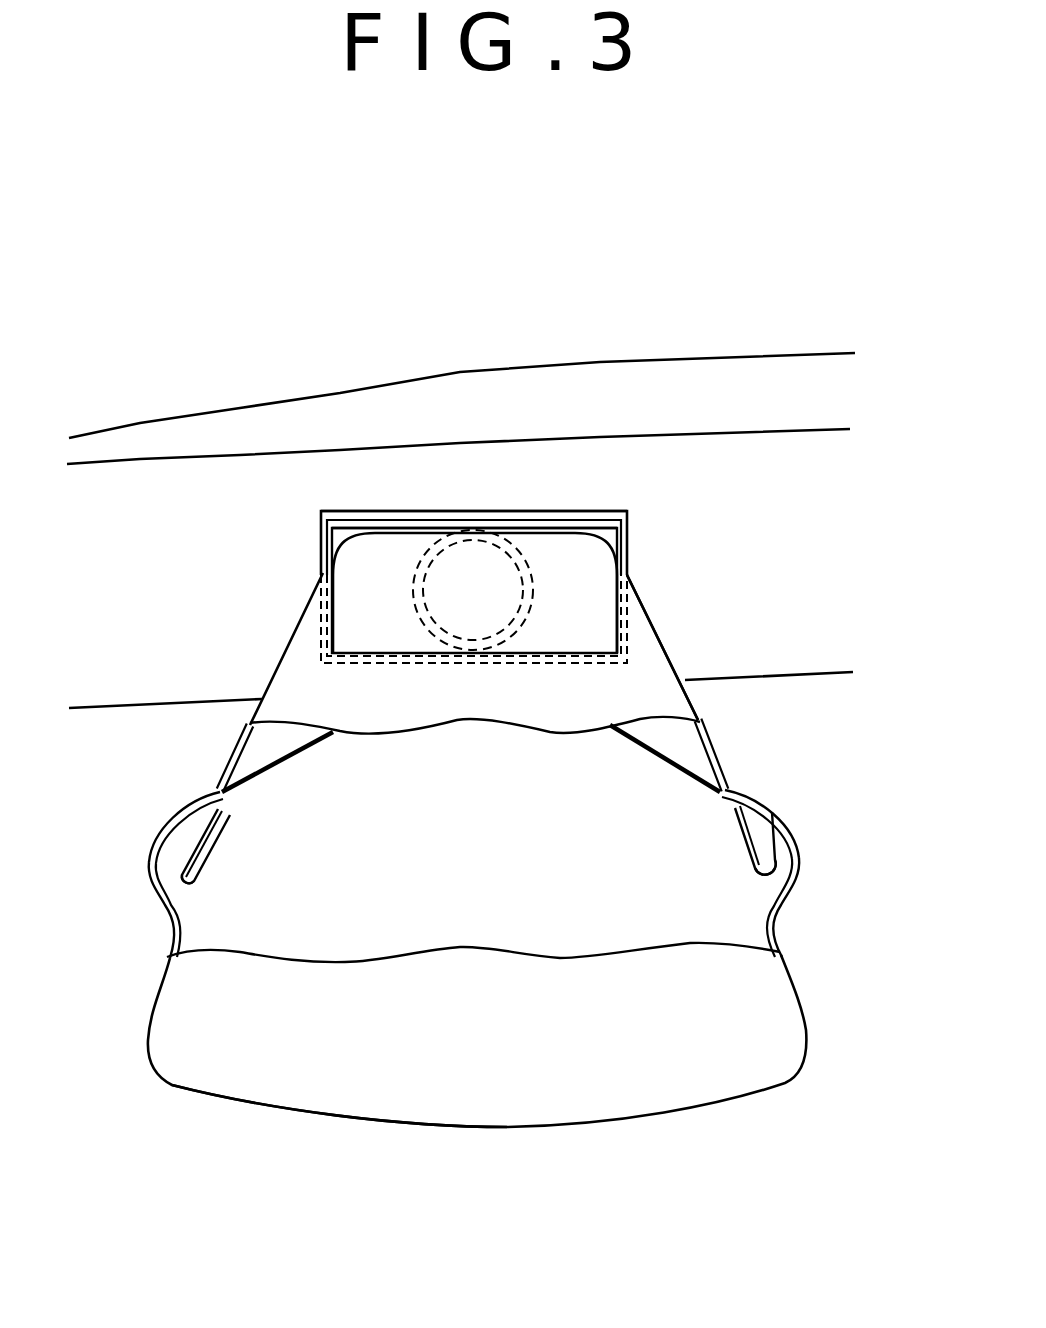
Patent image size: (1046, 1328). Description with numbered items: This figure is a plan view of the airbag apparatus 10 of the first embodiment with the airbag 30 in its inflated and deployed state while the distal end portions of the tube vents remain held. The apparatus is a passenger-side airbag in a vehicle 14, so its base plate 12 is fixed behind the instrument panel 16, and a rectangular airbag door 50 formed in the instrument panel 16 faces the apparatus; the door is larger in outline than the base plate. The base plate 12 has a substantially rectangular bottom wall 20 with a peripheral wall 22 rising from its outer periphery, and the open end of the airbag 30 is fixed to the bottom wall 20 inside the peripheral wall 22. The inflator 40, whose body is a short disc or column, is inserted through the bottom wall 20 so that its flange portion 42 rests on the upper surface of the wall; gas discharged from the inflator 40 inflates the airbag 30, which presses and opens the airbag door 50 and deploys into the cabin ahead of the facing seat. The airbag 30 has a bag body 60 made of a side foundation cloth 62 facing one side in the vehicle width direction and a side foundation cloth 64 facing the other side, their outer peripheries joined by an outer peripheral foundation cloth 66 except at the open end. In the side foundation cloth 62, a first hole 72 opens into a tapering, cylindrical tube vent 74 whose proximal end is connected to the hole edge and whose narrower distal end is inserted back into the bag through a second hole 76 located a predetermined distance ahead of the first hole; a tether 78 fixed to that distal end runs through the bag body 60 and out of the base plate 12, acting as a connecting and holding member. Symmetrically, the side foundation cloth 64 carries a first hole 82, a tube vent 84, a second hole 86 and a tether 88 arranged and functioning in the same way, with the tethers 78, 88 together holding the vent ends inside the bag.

The airbag apparatus 10 is at (690, 598).
The base plate 12 is at (640, 534).
The vehicle 14 is at (615, 338).
The instrument panel 16 is at (834, 658).
The bottom wall 20 is at (335, 543).
The peripheral wall 22 is at (367, 527).
The airbag 30 is at (752, 775).
The inflator 40 is at (440, 603).
The flange portion 42 is at (445, 568).
The airbag door 50 is at (475, 512).
The bag body 60 is at (521, 1087).
The side foundation cloth 62 is at (167, 950).
The side foundation cloth 64 is at (783, 937).
The outer peripheral foundation cloth 66 is at (650, 664).
The first hole 72 is at (193, 883).
The tube vent 74 is at (148, 878).
The second hole 76 is at (218, 815).
The tether 78 is at (300, 752).
The first hole 82 is at (752, 870).
The tube vent 84 is at (800, 847).
The second hole 86 is at (728, 812).
The tether 88 is at (660, 760).